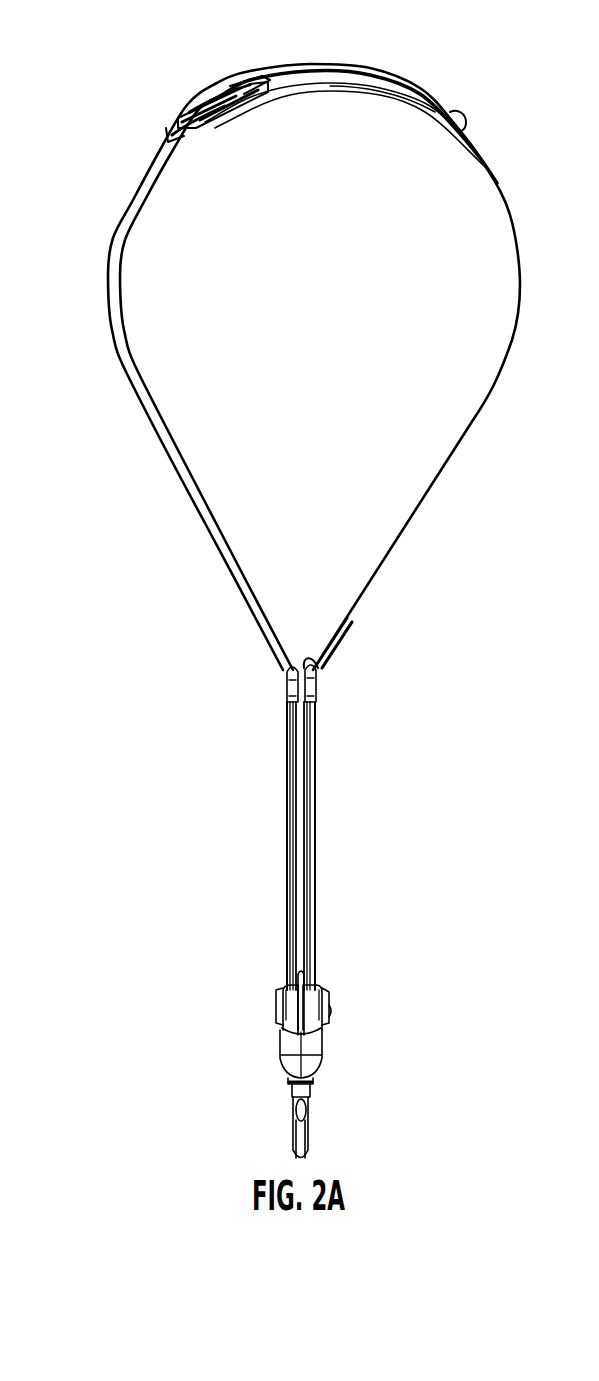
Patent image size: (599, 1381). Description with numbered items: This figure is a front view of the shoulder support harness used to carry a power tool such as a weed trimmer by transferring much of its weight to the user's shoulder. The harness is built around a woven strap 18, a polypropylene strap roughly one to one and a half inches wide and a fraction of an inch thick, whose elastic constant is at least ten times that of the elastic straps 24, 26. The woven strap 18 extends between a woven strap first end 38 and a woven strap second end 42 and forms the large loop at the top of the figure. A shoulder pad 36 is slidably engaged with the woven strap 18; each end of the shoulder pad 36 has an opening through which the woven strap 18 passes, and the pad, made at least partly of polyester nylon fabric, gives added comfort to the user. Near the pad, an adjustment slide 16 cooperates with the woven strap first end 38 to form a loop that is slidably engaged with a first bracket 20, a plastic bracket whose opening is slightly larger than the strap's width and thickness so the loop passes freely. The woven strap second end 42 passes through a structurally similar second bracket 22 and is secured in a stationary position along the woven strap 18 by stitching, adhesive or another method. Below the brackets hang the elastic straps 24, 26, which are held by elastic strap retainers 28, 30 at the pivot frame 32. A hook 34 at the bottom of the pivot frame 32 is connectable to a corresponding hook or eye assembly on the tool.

The adjustment slide 16 is at (243, 100).
The woven strap 18 is at (118, 362).
The first bracket 20 is at (287, 690).
The second bracket 22 is at (313, 690).
The elastic strap 24 is at (287, 832).
The elastic strap 26 is at (315, 815).
The elastic strap retainer 28 is at (283, 1000).
The elastic strap retainer 30 is at (322, 995).
The pivot frame 32 is at (290, 1045).
The hook 34 is at (298, 1115).
The shoulder pad 36 is at (306, 62).
The woven strap first end 38 is at (196, 130).
The woven strap second end 42 is at (343, 638).